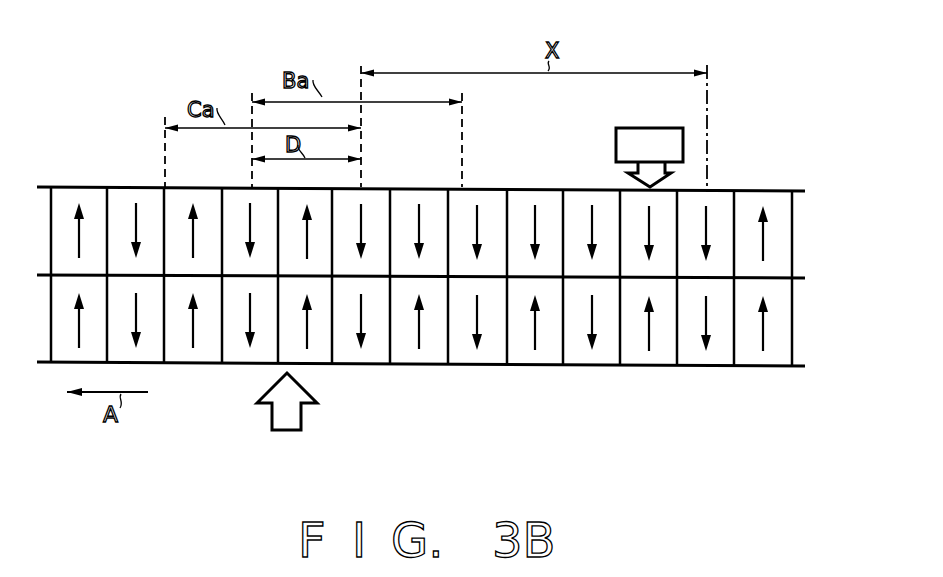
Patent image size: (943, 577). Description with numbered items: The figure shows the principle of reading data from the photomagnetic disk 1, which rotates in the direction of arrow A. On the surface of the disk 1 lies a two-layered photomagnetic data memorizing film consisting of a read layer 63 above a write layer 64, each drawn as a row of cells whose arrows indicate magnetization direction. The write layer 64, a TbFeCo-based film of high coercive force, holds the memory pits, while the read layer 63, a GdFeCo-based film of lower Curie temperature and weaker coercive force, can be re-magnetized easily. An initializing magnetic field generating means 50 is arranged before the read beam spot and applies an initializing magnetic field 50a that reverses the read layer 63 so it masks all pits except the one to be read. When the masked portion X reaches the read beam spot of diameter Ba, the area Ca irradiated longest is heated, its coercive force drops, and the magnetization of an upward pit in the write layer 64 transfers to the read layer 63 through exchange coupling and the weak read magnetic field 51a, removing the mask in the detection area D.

The photomagnetic disk 1 is at (722, 367).
The read layer 63 is at (794, 268).
The write layer 64 is at (794, 297).
The initializing magnetic field generating means 50 is at (616, 145).
The initializing magnetic field 50a is at (635, 183).
The read magnetic field 51a is at (301, 418).